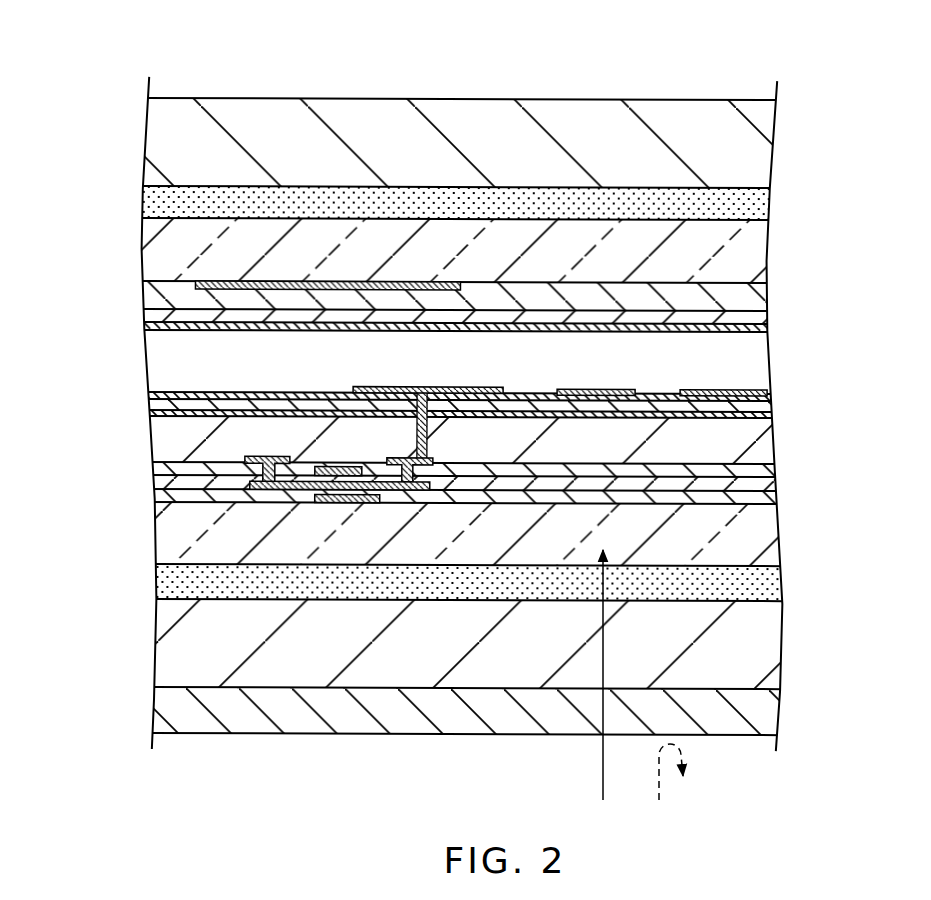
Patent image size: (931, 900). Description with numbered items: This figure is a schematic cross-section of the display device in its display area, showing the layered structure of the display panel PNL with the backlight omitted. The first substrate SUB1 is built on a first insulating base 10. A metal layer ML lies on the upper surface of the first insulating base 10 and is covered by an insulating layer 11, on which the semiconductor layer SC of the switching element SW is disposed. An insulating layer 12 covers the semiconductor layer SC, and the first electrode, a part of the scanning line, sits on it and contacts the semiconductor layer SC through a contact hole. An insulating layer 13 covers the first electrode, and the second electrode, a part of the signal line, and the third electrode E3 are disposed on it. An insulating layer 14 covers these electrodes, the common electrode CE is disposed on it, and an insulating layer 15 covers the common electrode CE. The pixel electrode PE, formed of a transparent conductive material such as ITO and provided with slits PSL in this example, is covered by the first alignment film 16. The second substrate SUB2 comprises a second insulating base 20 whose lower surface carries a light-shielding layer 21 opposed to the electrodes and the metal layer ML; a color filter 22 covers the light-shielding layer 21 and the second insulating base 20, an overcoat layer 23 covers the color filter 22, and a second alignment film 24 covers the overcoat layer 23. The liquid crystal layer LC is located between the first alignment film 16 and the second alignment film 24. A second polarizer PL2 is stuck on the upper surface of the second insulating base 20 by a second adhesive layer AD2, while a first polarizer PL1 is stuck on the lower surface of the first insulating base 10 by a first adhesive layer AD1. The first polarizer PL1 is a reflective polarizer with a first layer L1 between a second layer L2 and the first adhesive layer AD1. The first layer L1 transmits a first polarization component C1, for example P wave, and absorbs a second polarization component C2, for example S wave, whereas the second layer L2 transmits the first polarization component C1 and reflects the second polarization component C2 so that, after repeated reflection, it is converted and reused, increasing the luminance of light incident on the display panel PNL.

The display panel PNL is at (226, 78).
The second polarizer PL2 is at (154, 134).
The second adhesive layer AD2 is at (154, 200).
The second insulating base 20 is at (150, 252).
The light-shielding layer 21 is at (343, 282).
The color filter 22 is at (150, 295).
The overcoat layer 23 is at (150, 318).
The second alignment film 24 is at (158, 332).
The second substrate SUB2 is at (793, 298).
The liquid crystal layer LC is at (740, 360).
The first substrate SUB1 is at (792, 442).
The first alignment film 16 is at (154, 392).
The insulating layer 15 is at (154, 404).
The insulating layer 14 is at (154, 430).
The insulating layer 13 is at (154, 465).
The insulating layer 12 is at (154, 483).
The insulating layer 11 is at (154, 498).
The first insulating base 10 is at (156, 540).
The first adhesive layer AD1 is at (160, 582).
The first polarizer PL1 is at (102, 646).
The first layer L1 is at (162, 660).
The second layer L2 is at (162, 707).
The pixel electrode PE is at (450, 386).
The slits PSL is at (652, 386).
The common electrode CE is at (601, 419).
The third electrode E3 is at (438, 459).
The semiconductor layer SC is at (262, 503).
The metal layer ML is at (316, 504).
The switching element SW is at (420, 504).
The first polarization component C1 is at (602, 688).
The second polarization component C2 is at (666, 785).